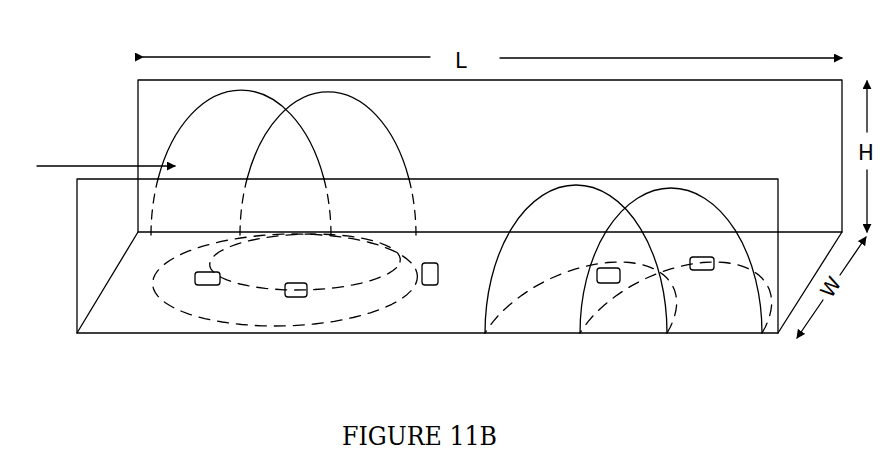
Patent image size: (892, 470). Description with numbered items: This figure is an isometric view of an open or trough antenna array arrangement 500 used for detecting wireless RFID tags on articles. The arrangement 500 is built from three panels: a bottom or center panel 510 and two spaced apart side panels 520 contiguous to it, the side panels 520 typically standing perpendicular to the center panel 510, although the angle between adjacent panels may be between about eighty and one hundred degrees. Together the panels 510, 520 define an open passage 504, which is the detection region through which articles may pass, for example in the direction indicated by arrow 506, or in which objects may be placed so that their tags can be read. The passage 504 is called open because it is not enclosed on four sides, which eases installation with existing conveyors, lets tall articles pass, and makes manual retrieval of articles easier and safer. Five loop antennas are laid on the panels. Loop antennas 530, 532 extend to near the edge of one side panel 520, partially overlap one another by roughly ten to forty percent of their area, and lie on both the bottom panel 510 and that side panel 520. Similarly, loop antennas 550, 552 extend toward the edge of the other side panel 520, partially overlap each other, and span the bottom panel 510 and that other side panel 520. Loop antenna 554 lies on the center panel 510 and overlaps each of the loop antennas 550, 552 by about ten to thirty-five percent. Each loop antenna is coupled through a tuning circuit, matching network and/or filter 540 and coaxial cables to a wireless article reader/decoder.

The open antenna array arrangement 500 is at (452, 176).
The open passage 504 is at (153, 147).
The arrow 506 is at (58, 160).
The center panel 510 is at (820, 262).
The side panel 520 is at (805, 121).
The loop antenna 530 is at (545, 195).
The loop antenna 532 is at (666, 190).
The tuning circuit, matching network and/or filter 540 is at (195, 285).
The loop antenna 550 is at (217, 97).
The loop antenna 552 is at (380, 118).
The loop antenna 554 is at (356, 328).